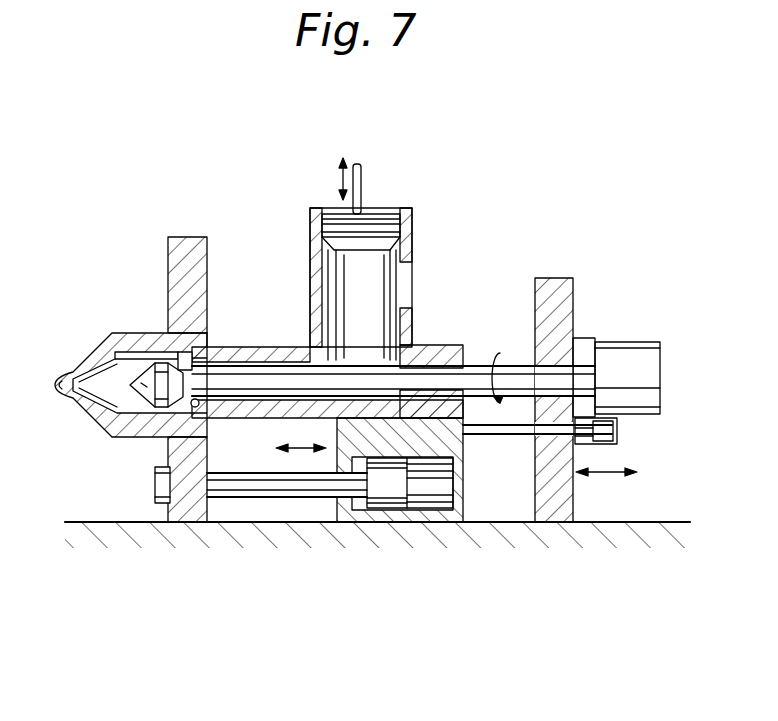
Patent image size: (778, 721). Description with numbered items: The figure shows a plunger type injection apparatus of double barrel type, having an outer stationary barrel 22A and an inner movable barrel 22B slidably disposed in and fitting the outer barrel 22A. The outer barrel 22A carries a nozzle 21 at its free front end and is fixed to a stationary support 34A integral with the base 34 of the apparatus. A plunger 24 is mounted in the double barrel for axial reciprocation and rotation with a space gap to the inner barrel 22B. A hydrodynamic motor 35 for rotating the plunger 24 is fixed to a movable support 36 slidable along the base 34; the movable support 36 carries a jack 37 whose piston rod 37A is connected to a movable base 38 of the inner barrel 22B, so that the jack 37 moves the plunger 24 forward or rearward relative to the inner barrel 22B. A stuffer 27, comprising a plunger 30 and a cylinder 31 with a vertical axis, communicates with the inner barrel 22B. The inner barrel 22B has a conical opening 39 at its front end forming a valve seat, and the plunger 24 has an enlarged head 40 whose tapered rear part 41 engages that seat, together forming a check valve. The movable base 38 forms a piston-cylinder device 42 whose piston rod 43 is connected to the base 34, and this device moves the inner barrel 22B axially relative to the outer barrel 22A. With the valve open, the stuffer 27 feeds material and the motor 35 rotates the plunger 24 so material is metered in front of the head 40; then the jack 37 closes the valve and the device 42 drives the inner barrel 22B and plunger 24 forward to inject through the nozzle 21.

The nozzle 21 is at (55, 400).
The outer stationary barrel 22A is at (122, 333).
The inner movable barrel 22B is at (257, 347).
The plunger 24 is at (475, 367).
The stuffer 27 is at (310, 240).
The plunger 30 is at (375, 227).
The cylinder 31 is at (407, 278).
The base 34 is at (638, 519).
The stationary support 34A is at (168, 265).
The hydrodynamic motor 35 is at (650, 368).
The movable support 36 is at (567, 305).
The jack 37 is at (612, 445).
The piston rod 37A is at (510, 434).
The movable base 38 is at (467, 502).
The conical opening 39 is at (193, 404).
The enlarged head 40 is at (150, 383).
The tapered rear part 41 is at (165, 352).
The piston-cylinder device 42 is at (393, 490).
The piston rod 43 is at (292, 483).